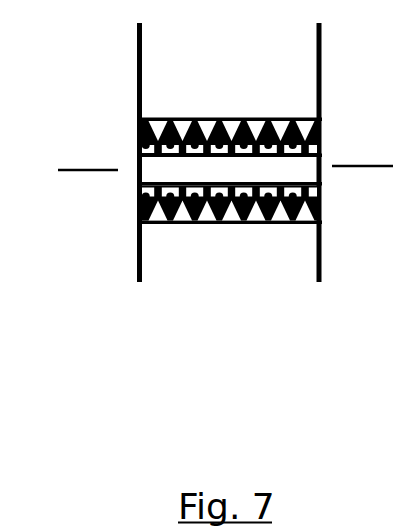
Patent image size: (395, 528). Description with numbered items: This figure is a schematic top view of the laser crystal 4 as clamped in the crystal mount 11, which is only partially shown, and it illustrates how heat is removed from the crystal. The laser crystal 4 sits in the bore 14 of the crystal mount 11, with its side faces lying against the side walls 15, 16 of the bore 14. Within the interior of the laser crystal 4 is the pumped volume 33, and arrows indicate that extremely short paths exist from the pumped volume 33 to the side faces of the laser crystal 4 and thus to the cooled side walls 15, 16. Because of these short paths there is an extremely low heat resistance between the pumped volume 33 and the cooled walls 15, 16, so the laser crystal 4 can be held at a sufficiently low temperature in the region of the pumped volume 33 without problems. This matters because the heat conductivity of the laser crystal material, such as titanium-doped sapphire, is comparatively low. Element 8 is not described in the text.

The laser crystal 4 is at (285, 214).
The center plane 8 is at (75, 171).
The crystal mount 11 is at (138, 243).
The bore 14 is at (310, 124).
The side wall 15 is at (165, 225).
The side wall 16 is at (189, 117).
The pumped volume 33 is at (138, 153).